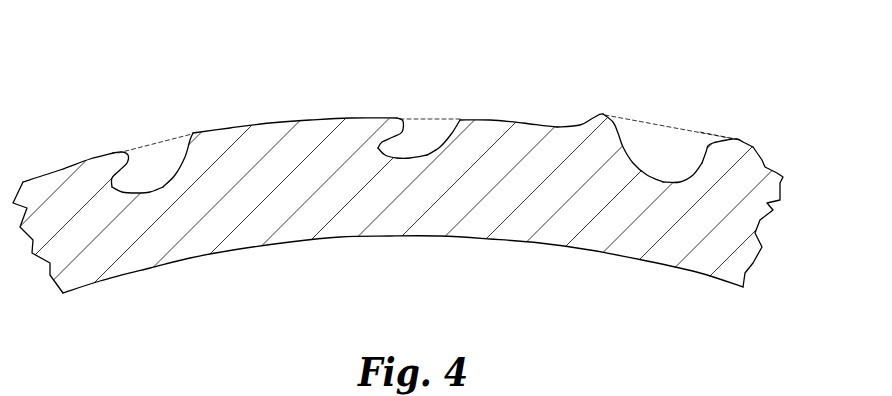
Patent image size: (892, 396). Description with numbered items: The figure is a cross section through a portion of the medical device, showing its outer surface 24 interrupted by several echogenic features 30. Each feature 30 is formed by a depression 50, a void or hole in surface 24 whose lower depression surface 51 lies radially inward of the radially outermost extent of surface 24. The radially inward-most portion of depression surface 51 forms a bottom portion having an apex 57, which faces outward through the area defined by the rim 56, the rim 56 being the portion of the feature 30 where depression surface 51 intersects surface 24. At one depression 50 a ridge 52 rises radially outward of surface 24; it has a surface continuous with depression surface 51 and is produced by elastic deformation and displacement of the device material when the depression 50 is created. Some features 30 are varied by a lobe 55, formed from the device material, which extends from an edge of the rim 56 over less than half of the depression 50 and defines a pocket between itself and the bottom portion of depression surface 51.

The surface 24 is at (308, 121).
The echogenic feature 30 is at (168, 118).
The depression 50 is at (722, 100).
The depression surface 51 is at (712, 144).
The ridge 52 is at (603, 113).
The lobe 55 is at (114, 163).
The rim 56 is at (190, 133).
The apex 57 is at (148, 193).